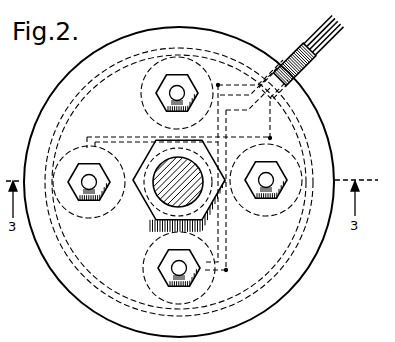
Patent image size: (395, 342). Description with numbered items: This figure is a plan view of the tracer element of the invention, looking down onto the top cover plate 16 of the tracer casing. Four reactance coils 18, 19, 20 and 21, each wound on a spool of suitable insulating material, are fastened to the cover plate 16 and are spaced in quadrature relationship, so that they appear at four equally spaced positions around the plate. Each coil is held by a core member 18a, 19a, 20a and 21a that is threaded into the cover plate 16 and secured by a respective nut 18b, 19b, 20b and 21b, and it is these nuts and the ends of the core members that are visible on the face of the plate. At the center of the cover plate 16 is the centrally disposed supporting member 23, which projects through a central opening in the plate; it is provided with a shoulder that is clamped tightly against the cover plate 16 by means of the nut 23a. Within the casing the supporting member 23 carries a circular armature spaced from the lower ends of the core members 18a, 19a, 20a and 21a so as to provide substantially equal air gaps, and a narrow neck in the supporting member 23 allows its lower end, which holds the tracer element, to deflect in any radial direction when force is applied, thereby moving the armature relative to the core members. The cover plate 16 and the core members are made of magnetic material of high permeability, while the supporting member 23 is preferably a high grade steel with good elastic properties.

The top cover plate 16 is at (322, 125).
The reactance coil 18 is at (70, 148).
The core member 18a is at (91, 189).
The nut 18b is at (105, 172).
The reactance coil 19 is at (146, 254).
The core member 19a is at (178, 267).
The nut 19b is at (167, 275).
The reactance coil 20 is at (272, 220).
The core member 20a is at (268, 180).
The nut 20b is at (260, 197).
The reactance coil 21 is at (141, 93).
The core member 21a is at (172, 97).
The nut 21b is at (198, 89).
The supporting member 23 is at (163, 192).
The nut 23a is at (160, 215).